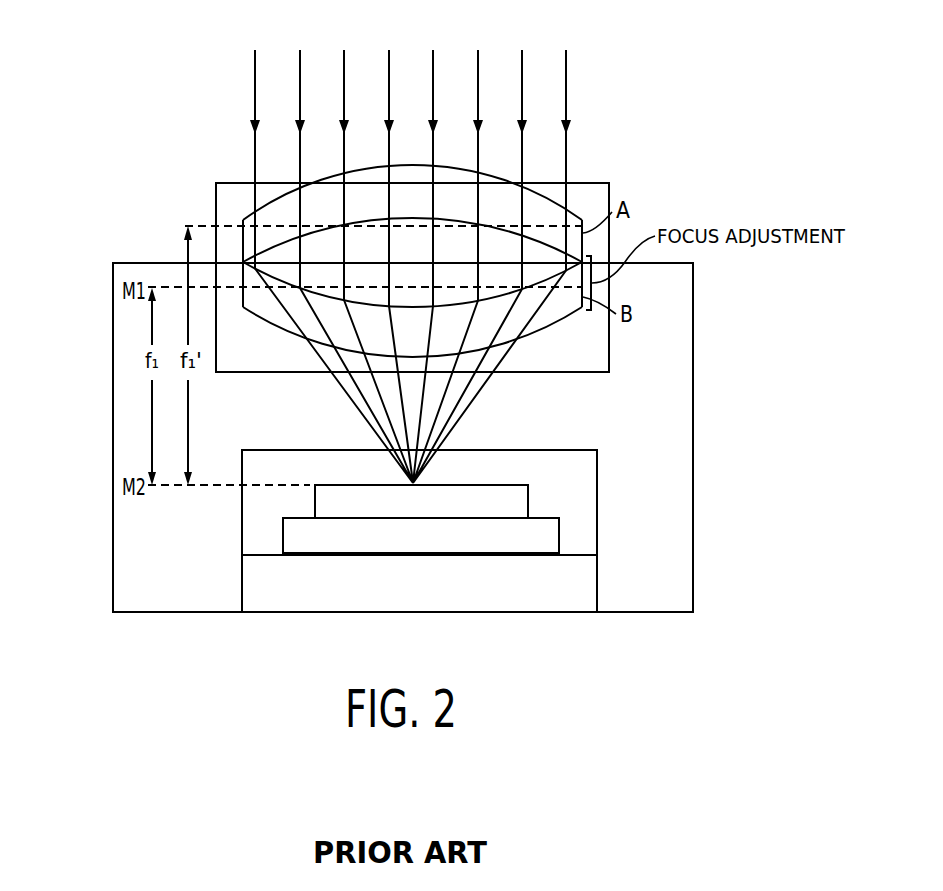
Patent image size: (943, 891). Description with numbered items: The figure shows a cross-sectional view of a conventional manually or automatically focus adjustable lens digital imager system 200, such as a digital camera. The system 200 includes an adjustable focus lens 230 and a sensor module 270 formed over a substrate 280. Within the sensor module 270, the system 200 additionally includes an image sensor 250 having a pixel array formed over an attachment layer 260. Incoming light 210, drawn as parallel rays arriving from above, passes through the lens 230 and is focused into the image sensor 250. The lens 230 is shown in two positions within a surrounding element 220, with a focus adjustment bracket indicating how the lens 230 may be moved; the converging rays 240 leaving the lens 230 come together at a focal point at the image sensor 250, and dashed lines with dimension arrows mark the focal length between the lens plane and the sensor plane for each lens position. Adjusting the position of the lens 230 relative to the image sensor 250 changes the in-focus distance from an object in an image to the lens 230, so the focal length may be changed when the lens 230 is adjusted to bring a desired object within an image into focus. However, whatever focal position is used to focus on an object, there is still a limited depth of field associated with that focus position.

The focus adjustable lens digital imager system 200 is at (118, 113).
The incoming light 210 is at (566, 101).
The lens housing 220 is at (585, 183).
The adjustable focus lens 230 is at (272, 325).
The focused light 240 is at (383, 450).
The image sensor 250 is at (448, 490).
The attachment layer 260 is at (547, 538).
The sensor module 270 is at (587, 480).
The substrate 280 is at (528, 605).